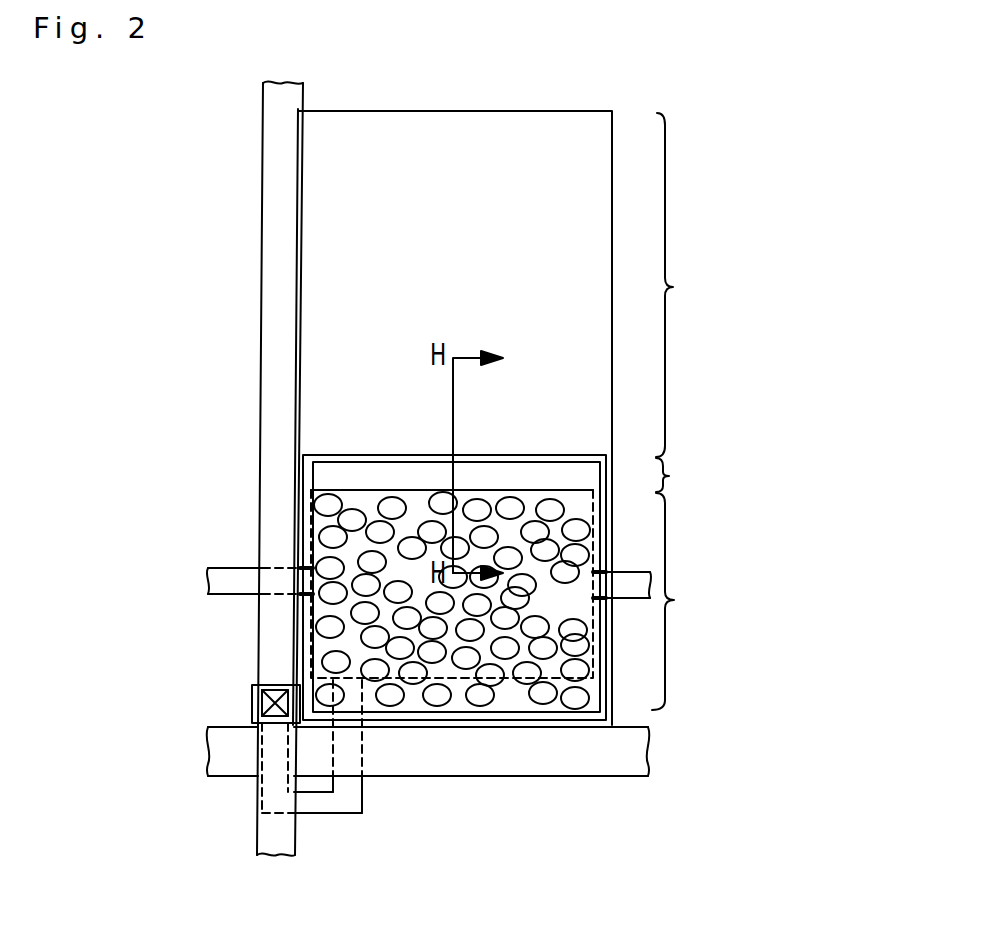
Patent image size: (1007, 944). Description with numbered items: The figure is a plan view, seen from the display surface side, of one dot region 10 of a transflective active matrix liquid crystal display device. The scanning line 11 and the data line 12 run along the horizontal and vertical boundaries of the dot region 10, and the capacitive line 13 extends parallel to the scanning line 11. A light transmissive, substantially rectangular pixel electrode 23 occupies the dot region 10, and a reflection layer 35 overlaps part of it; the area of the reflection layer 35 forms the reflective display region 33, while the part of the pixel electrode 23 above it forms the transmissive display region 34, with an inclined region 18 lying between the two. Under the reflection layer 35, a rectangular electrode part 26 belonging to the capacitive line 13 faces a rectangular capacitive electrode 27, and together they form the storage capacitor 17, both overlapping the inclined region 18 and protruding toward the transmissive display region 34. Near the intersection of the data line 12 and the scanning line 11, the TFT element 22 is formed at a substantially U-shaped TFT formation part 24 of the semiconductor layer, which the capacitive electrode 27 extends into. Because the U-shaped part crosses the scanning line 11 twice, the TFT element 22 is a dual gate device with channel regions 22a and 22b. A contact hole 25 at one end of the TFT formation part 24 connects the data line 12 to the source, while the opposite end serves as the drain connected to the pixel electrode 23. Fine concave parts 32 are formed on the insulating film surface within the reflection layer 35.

The dot region 10 is at (735, 153).
The scanning line 11 is at (620, 768).
The data line 12 is at (275, 353).
The capacitive line 13 is at (228, 578).
The storage capacitor 17 is at (454, 480).
The inclined region 18 is at (675, 476).
The TFT element 22 is at (320, 795).
The channel region 22a is at (348, 752).
The channel region 22b is at (277, 757).
The pixel electrode 23 is at (330, 215).
The TFT formation part 24 is at (333, 813).
The contact hole 25 is at (253, 698).
The electrode part 26 is at (335, 475).
The capacitive electrode 27 is at (387, 456).
The concave parts 32 is at (445, 697).
The reflective display region 33 is at (678, 601).
The transmissive display region 34 is at (681, 285).
The reflection layer 35 is at (318, 523).